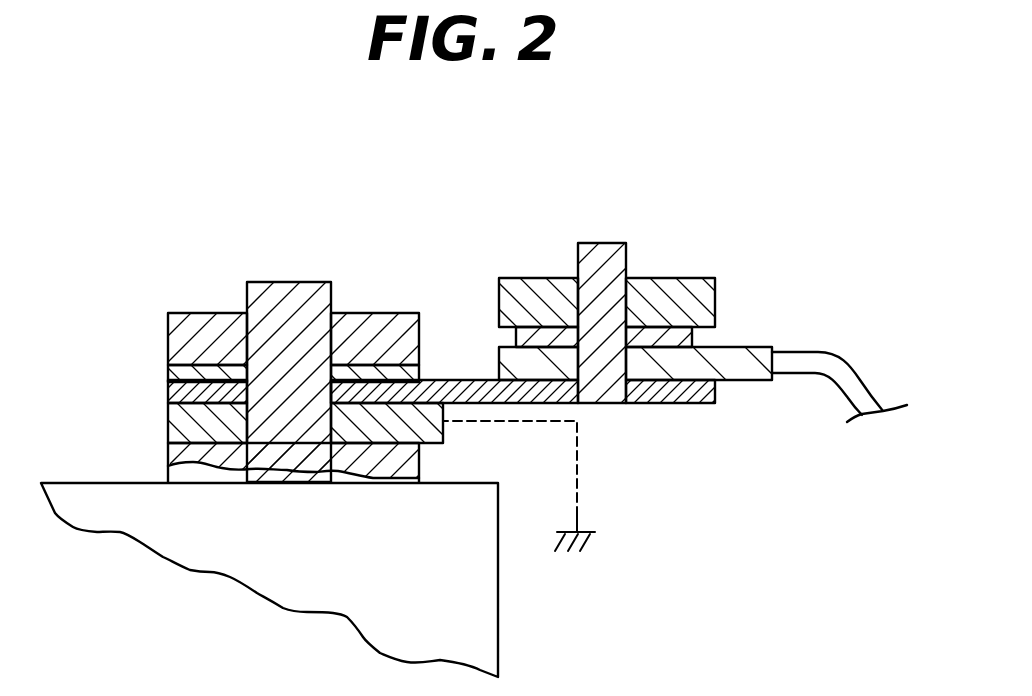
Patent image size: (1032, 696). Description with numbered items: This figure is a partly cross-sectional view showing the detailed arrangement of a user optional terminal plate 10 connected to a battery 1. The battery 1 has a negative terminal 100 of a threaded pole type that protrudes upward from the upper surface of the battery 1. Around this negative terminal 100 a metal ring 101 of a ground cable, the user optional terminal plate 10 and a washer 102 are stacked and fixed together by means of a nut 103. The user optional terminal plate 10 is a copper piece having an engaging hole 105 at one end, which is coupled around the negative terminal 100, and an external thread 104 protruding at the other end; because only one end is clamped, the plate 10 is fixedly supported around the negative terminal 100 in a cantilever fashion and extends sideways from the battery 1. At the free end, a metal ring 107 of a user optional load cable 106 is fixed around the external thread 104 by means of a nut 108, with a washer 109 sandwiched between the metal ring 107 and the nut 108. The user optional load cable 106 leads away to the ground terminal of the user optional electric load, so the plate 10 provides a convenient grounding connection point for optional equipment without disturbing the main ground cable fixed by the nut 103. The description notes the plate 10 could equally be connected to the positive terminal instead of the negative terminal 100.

The battery 1 is at (207, 557).
The user optional terminal plate 10 is at (450, 355).
The negative terminal 100 is at (288, 293).
The metal ring 101 is at (178, 427).
The washer 102 is at (173, 372).
The nut 103 is at (207, 332).
The external thread 104 is at (602, 257).
The engaging hole 105 is at (327, 393).
The user optional load cable 106 is at (833, 365).
The metal ring 107 is at (742, 353).
The nut 108 is at (695, 287).
The washer 109 is at (657, 337).